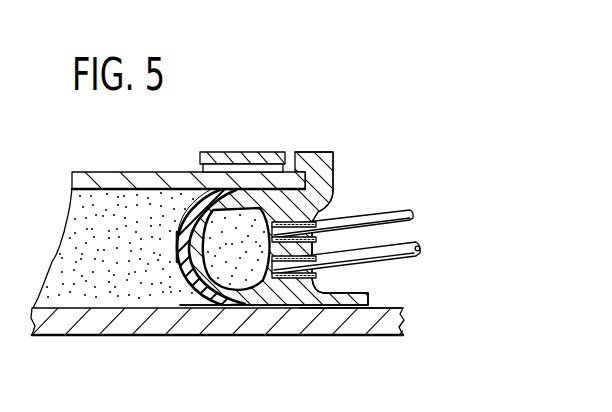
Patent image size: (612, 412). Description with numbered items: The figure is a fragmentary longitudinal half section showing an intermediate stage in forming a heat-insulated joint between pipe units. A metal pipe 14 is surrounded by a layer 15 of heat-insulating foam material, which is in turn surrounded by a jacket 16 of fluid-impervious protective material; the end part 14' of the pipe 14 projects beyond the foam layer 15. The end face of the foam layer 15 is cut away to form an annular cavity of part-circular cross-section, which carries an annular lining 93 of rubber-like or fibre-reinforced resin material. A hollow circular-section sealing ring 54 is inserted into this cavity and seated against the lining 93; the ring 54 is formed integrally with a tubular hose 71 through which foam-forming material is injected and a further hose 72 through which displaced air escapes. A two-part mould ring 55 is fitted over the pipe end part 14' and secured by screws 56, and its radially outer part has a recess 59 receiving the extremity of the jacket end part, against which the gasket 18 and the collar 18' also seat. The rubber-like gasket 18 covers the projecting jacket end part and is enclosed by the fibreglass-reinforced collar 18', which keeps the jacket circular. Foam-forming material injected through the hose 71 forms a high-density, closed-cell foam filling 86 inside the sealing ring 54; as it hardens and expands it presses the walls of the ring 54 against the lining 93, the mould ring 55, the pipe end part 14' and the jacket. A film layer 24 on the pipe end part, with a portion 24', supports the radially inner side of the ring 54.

The metal pipe 14 is at (228, 344).
The pipe end part 14' is at (361, 347).
The heat-insulating foam layer 15 is at (108, 296).
The jacket 16 is at (107, 172).
The rubber-like coating 18 is at (247, 138).
The collar 18' is at (243, 135).
The film layer 24 is at (193, 281).
The liner foot 24' is at (190, 355).
The hollow sealing ring 54 is at (264, 290).
The mould ring 55 is at (313, 210).
The screw 56 is at (342, 277).
The recess 59 is at (307, 178).
The injection hose 71 is at (404, 253).
The air escape hose 72 is at (396, 210).
The foam filling 86 is at (228, 265).
The lining 93 is at (180, 250).